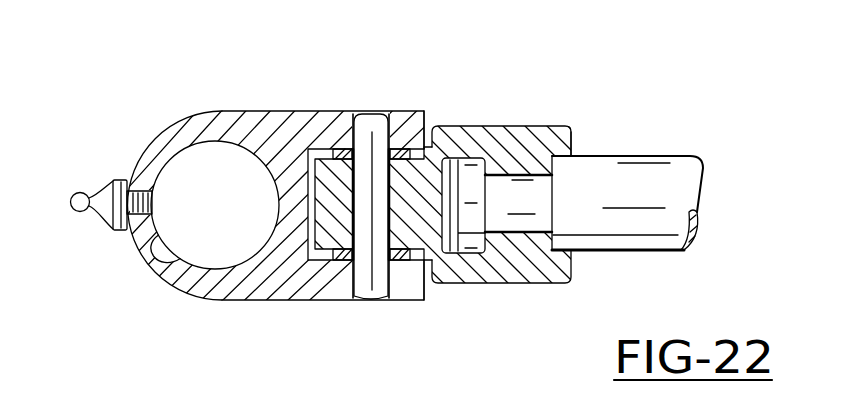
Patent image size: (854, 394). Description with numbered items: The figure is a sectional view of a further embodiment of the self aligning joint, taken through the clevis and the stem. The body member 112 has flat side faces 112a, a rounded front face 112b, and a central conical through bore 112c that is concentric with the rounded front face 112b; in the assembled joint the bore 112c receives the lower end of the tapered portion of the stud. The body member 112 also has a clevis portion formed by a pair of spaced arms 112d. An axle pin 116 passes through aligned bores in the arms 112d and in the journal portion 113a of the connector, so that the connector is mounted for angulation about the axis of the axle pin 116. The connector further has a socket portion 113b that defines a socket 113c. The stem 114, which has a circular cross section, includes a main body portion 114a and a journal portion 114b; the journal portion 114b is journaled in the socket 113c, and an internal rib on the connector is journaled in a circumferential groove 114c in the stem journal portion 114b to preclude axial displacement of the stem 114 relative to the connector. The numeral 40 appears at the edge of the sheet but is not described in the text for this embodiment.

The clamp body 112 is at (257, 205).
The clamp body wall 112a is at (246, 112).
The clamp ring portion 112b is at (145, 142).
The groove in clamp bore 112c is at (157, 240).
The clevis arm of clamp body 112d is at (424, 113).
The hinge lug of coupling member 113a is at (322, 157).
The bore of coupling member 113b is at (516, 174).
The bushing of coupling member 113c is at (476, 250).
The tube 114 is at (653, 191).
The tube end 114a is at (690, 155).
The tube inner end 114b is at (567, 217).
The tube shoulder 114c is at (650, 154).
The hinge pin 116 is at (374, 114).
The support arm 40 is at (193, 390).